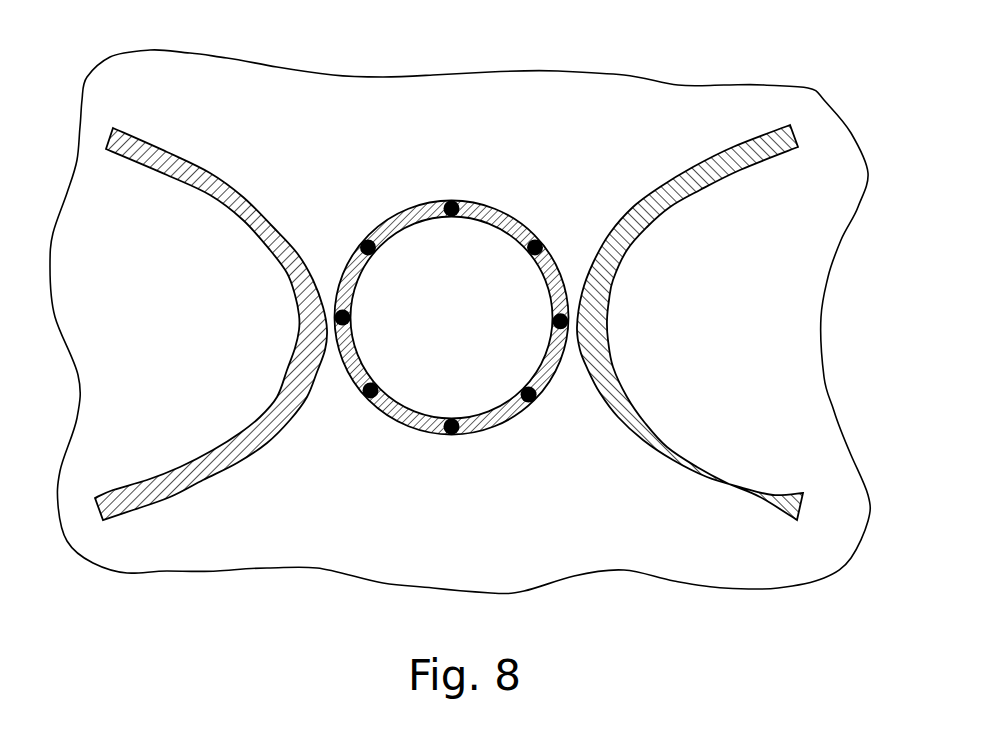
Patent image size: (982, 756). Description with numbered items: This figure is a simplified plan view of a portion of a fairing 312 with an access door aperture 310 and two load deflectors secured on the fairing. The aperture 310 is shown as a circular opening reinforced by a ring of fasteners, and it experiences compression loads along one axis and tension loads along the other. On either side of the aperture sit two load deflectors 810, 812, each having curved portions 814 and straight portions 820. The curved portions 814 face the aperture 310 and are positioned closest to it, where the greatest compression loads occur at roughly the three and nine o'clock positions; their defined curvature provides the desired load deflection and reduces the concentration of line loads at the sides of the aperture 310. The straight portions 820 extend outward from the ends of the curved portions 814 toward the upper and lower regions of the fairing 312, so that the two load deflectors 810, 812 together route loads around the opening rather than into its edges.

The fairing 312 is at (227, 53).
The access aperture 310 is at (473, 410).
The load deflector 810 is at (152, 500).
The load deflector 812 is at (750, 500).
The curved portions 814 is at (258, 330).
The straight portions 820 is at (126, 177).